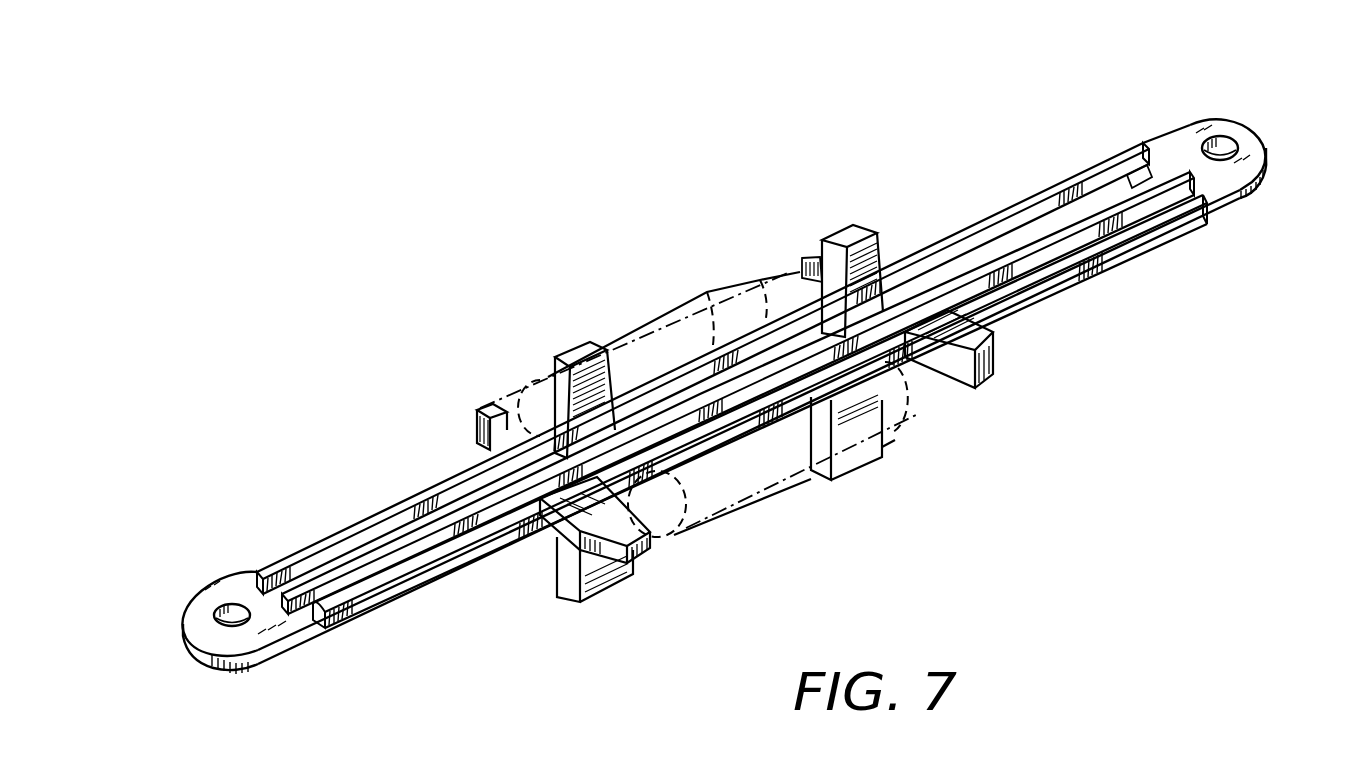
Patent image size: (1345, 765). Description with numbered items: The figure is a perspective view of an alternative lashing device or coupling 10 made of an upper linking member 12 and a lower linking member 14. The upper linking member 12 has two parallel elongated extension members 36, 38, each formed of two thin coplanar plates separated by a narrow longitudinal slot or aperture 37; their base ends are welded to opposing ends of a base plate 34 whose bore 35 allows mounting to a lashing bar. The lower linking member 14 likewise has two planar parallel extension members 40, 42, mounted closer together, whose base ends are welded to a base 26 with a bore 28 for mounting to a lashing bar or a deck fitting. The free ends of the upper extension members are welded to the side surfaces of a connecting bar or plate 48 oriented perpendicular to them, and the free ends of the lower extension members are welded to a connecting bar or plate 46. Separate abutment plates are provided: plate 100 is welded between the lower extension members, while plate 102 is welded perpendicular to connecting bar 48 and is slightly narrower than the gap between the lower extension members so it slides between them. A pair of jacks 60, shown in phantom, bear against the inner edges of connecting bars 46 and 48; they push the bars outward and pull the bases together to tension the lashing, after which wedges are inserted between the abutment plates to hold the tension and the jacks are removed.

The lashing device or coupling 10 is at (595, 178).
The upper linking member 12 is at (1205, 292).
The lower linking member 14 is at (308, 658).
The base 26 is at (238, 590).
The bore 28 is at (230, 612).
The base plate 34 is at (1260, 160).
The bore 35 is at (1225, 140).
The extension member 36 is at (1037, 185).
The elongated slot or aperture 37 is at (1075, 292).
The extension member 38 is at (1190, 243).
The extension member 40 is at (447, 555).
The extension member 42 is at (392, 492).
The connecting bar or plate 46 is at (992, 383).
The connecting bar or plate 48 is at (648, 550).
The jack 60 is at (708, 305).
The abutment plate 100 is at (853, 225).
The abutment plate 102 is at (560, 345).